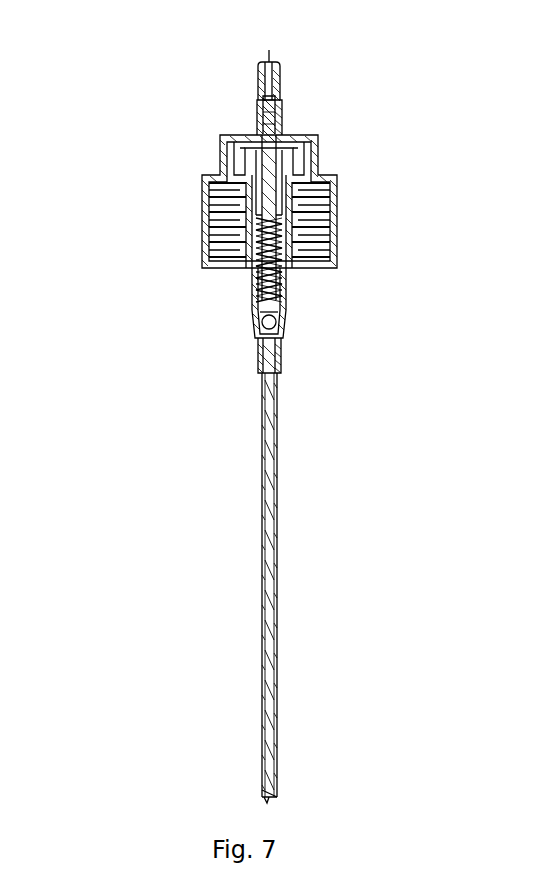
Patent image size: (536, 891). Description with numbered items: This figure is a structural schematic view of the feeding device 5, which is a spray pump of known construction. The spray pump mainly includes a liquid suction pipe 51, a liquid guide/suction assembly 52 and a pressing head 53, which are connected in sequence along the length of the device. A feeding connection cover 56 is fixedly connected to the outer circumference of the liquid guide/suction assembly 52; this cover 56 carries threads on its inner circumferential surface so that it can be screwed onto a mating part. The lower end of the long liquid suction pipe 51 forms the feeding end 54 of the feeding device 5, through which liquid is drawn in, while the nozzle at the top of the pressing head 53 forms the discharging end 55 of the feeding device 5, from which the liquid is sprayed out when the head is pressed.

The feeding device 5 is at (143, 140).
The liquid suction pipe 51 is at (277, 422).
The liquid guide/suction assembly 52 is at (290, 288).
The pressing head 53 is at (283, 110).
The feeding end 54 is at (276, 795).
The discharging end 55 is at (270, 62).
The feeding connection cover 56 is at (338, 218).